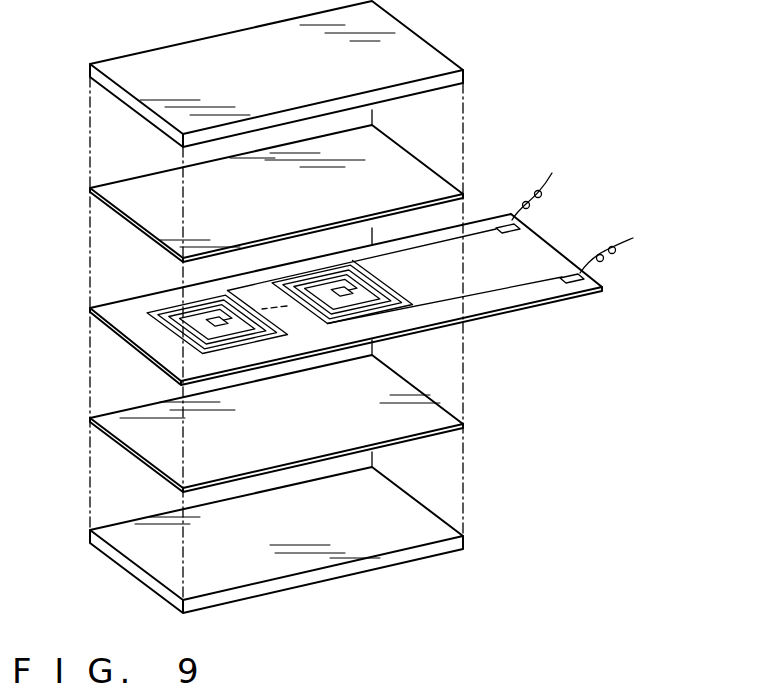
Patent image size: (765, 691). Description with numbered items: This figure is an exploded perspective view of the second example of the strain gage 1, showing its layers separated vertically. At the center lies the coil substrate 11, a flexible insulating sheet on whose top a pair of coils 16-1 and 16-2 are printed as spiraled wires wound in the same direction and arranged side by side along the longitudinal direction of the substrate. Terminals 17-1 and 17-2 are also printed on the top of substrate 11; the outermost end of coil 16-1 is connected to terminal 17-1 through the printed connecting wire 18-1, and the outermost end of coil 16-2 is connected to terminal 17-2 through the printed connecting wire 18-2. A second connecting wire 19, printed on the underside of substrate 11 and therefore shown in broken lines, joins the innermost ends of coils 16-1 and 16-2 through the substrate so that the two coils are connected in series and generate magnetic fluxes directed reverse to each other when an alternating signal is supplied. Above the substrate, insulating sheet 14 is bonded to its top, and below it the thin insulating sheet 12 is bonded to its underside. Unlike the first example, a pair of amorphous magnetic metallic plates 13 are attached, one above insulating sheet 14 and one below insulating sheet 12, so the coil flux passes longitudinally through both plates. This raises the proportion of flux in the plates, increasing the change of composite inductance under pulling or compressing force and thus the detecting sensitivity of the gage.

The strain gage 1 is at (562, 472).
The coil substrate 11 is at (112, 310).
The insulating sheet 12 is at (112, 420).
The amorphous magnetic metallic plate 13 is at (112, 64).
The insulating sheet 14 is at (112, 188).
The coil 16-1 is at (163, 303).
The coil 16-2 is at (368, 281).
The terminal 17-1 is at (577, 285).
The terminal 17-2 is at (504, 216).
The connecting wire 18-1 is at (498, 299).
The connecting wire 18-2 is at (478, 236).
The second connecting wire 19 is at (287, 306).